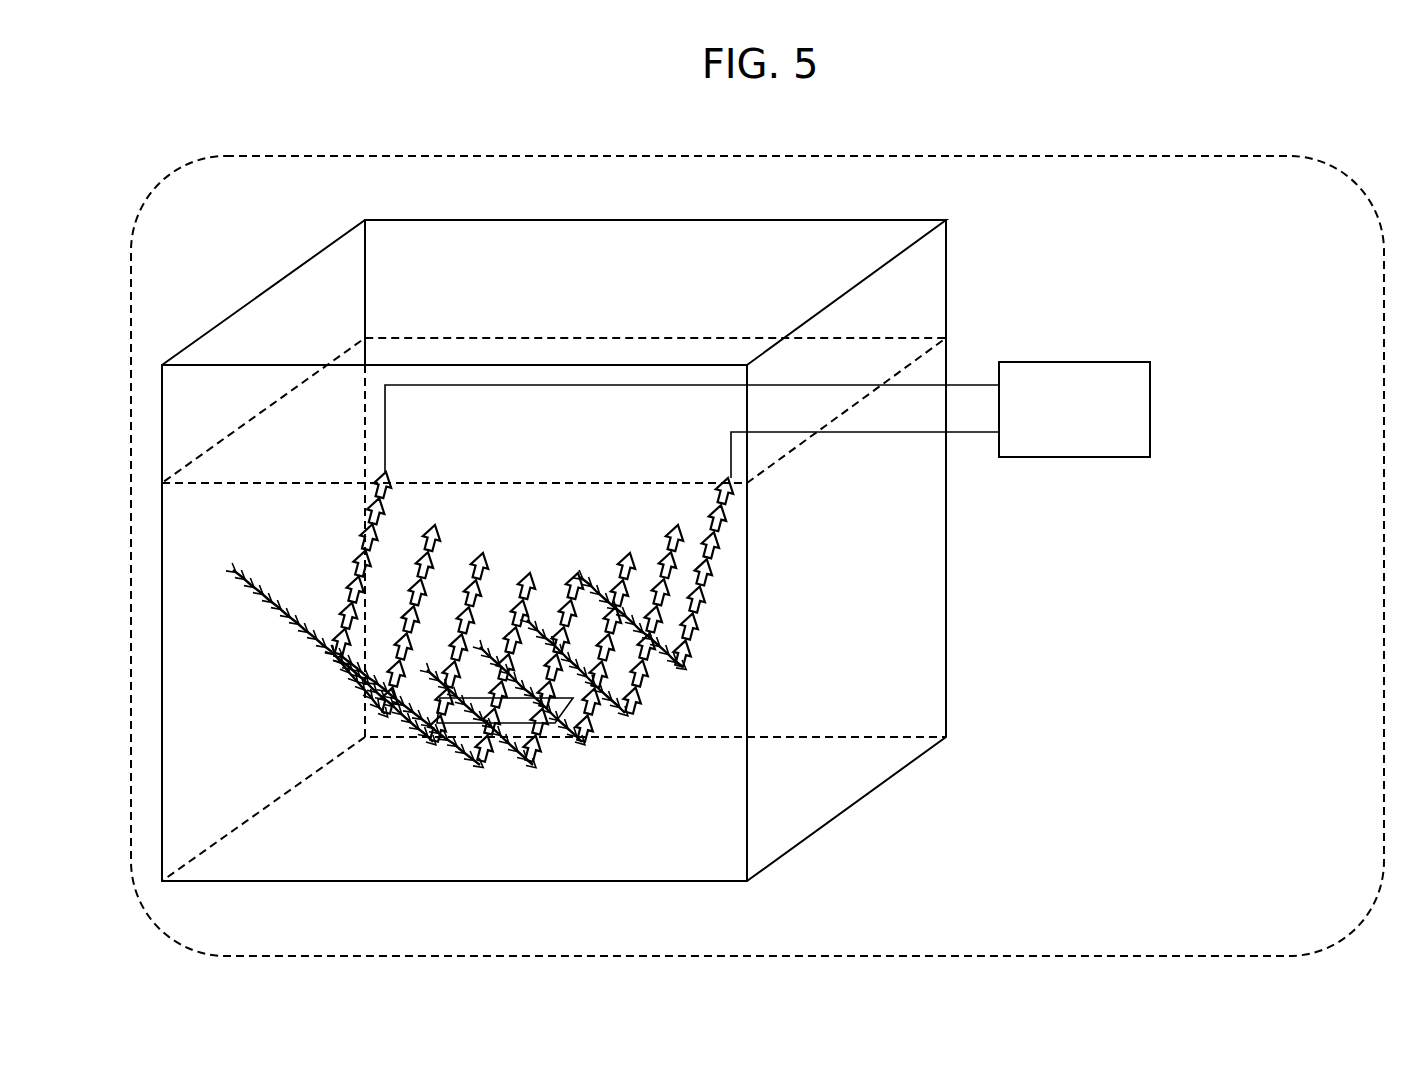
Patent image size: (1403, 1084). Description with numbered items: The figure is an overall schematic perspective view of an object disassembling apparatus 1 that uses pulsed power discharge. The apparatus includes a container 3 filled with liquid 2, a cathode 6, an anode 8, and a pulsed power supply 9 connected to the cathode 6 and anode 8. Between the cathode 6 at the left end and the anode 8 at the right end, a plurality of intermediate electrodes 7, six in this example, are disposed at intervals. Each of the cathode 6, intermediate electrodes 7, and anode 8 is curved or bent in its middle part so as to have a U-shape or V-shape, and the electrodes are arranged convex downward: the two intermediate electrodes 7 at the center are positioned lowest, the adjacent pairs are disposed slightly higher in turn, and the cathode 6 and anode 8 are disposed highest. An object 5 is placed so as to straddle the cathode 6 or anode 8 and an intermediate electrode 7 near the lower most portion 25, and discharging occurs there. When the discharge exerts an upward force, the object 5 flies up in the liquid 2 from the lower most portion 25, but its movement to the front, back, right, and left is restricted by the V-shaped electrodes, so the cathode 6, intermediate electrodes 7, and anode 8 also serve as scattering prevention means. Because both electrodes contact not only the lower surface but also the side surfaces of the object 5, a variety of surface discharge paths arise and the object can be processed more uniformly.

The object disassembling apparatus 1 is at (201, 165).
The liquid 2 is at (918, 665).
The container 3 is at (946, 545).
The object 5 is at (527, 712).
The cathode 6 is at (352, 563).
The intermediate electrode 7 is at (678, 525).
The anode 8 is at (730, 563).
The pulsed power supply 9 is at (1066, 362).
The lower most portion 25 is at (499, 767).